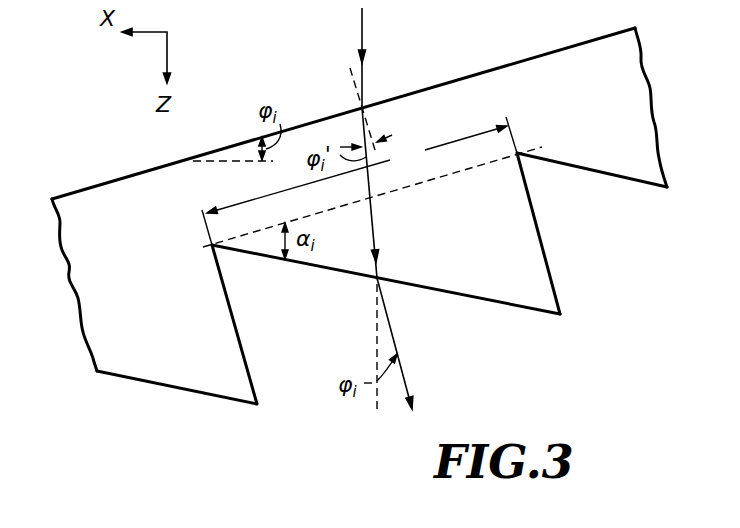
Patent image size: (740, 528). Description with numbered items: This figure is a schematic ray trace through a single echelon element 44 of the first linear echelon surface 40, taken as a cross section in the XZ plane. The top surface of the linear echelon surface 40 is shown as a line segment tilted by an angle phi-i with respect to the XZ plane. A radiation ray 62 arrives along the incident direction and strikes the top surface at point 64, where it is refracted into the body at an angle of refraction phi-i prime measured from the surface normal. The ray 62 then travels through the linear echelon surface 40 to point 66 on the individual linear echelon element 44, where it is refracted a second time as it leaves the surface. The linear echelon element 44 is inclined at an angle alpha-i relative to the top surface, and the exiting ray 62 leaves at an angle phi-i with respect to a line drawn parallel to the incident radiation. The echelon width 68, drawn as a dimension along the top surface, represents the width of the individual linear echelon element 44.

The first linear echelon surface 40 is at (82, 284).
The linear echelon element 44 is at (513, 304).
The radiation ray 62 is at (366, 15).
The point 64 is at (364, 106).
The point 66 is at (380, 278).
The echelon width 68 is at (359, 181).